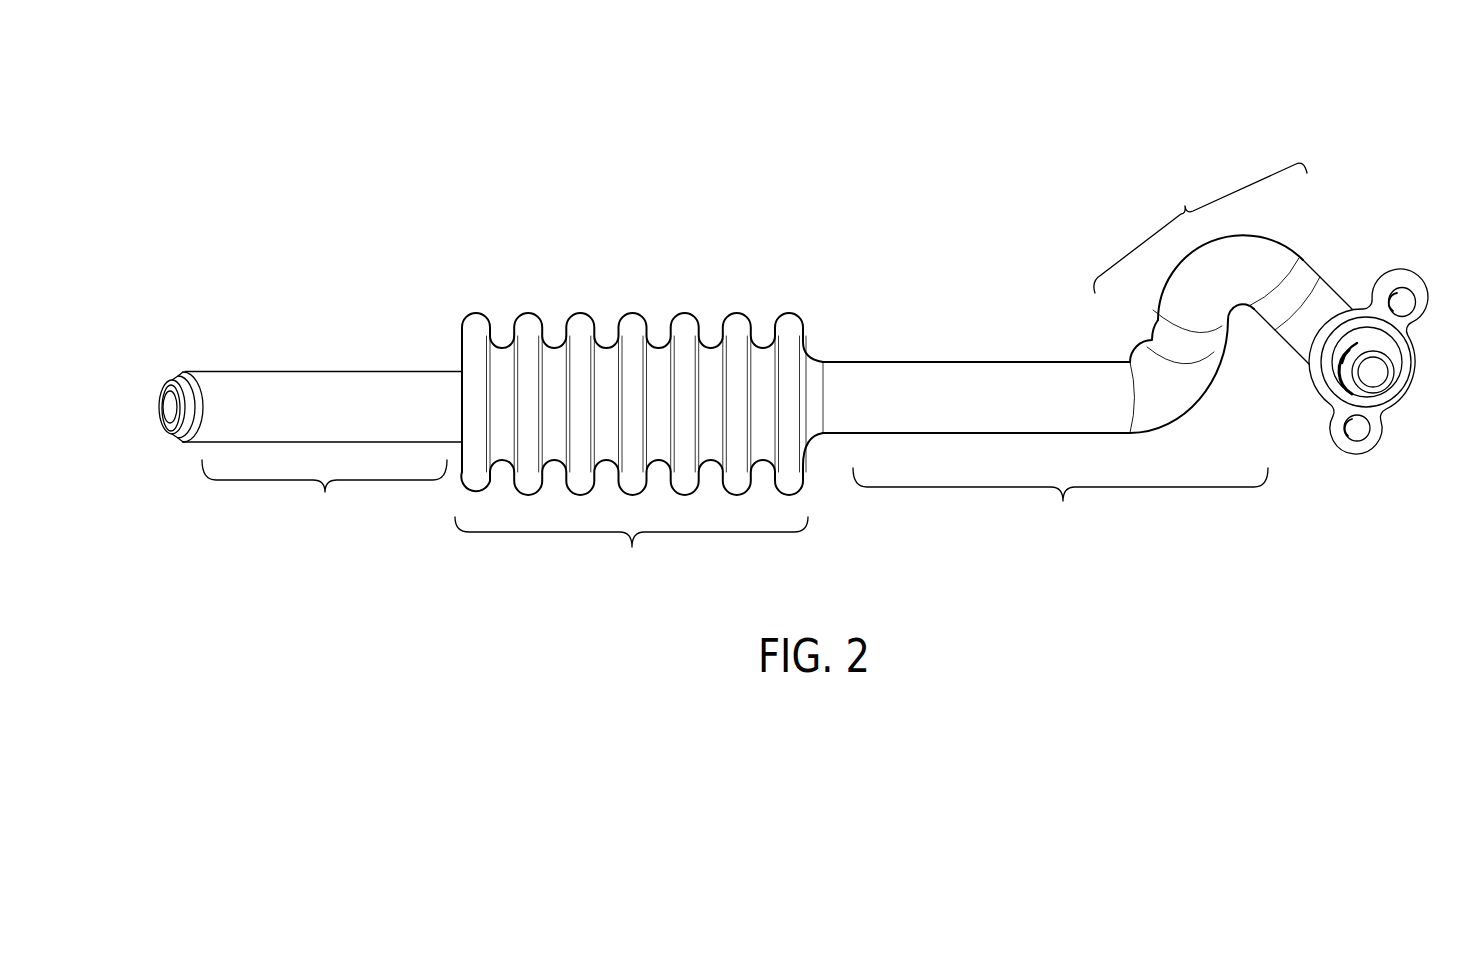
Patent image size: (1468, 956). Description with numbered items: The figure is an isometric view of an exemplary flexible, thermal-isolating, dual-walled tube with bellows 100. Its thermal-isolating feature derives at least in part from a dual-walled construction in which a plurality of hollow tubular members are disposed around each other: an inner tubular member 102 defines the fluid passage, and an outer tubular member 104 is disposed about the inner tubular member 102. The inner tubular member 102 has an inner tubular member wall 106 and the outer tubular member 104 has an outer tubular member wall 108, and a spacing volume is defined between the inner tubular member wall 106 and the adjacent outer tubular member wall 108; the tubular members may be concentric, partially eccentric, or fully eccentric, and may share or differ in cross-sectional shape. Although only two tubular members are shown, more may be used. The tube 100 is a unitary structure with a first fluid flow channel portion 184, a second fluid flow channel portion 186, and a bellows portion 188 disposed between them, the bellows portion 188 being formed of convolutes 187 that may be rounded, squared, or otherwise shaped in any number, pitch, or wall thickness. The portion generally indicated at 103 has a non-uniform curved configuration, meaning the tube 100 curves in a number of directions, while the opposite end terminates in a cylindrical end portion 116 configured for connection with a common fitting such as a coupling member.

The flexible, thermal-isolating, dual-walled tube with bellows 100 is at (389, 158).
The inner tubular member 102 is at (157, 372).
The non-uniform curved configuration 103 is at (1207, 263).
The outer tubular member 104 is at (180, 454).
The inner tubular member wall 106 is at (187, 408).
The outer tubular member wall 108 is at (232, 386).
The cylindrical end portion 116 is at (142, 439).
The first fluid flow channel portion 184 is at (324, 509).
The second fluid flow channel portion 186 is at (1045, 428).
The convolutes 187 is at (527, 313).
The bellows portion 188 is at (639, 418).